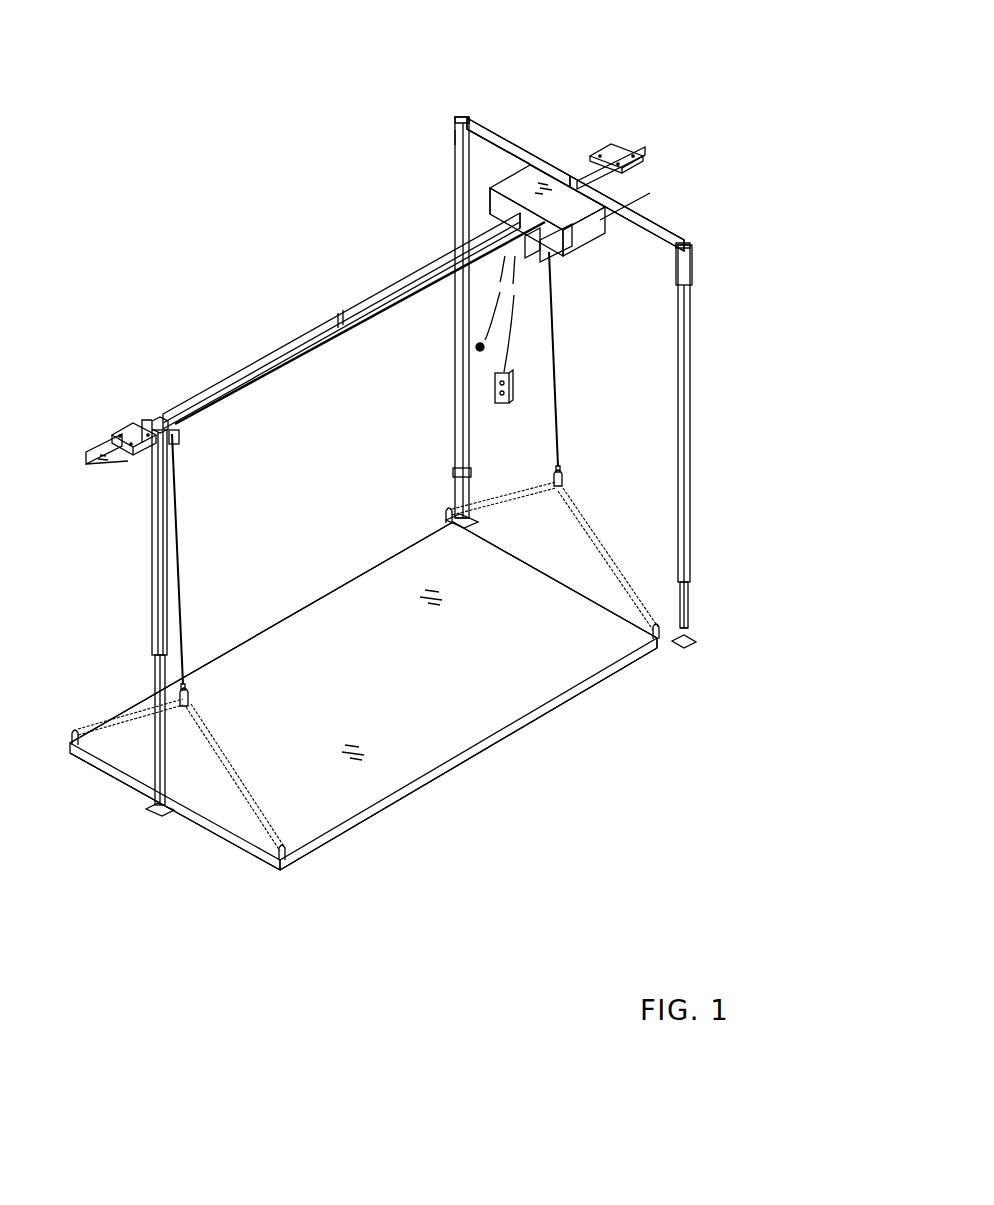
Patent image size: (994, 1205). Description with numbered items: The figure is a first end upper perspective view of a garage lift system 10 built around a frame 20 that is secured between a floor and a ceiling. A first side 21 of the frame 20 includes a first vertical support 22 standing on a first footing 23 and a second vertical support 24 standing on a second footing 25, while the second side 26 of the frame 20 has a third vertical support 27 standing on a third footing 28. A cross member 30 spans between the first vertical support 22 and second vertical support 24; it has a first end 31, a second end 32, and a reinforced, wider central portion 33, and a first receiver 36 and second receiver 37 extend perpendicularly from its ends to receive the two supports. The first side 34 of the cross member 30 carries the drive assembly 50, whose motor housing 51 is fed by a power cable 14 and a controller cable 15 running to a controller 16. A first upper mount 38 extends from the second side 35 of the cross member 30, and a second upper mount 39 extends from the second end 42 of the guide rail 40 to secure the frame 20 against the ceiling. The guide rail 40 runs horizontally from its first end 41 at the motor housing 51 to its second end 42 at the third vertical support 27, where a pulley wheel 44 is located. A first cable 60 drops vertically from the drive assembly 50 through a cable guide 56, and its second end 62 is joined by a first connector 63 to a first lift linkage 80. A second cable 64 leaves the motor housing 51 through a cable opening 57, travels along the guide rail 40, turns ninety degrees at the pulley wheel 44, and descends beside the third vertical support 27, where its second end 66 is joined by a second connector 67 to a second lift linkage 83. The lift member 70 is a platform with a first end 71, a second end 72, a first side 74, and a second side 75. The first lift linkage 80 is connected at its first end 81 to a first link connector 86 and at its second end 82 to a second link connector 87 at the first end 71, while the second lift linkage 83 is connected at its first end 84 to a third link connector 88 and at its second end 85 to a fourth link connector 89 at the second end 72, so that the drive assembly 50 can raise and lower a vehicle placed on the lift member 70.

The garage lift system 10 is at (220, 156).
The power cable 14 is at (478, 327).
The controller cable 15 is at (498, 385).
The controller 16 is at (501, 405).
The frame 20 is at (509, 126).
The first side of the frame 21 is at (521, 162).
The first vertical support 22 is at (690, 400).
The first footing 23 is at (694, 641).
The second vertical support 24 is at (455, 190).
The second footing 25 is at (470, 521).
The second side of the frame 26 is at (152, 568).
The third vertical support 27 is at (152, 628).
The third footing 28 is at (148, 815).
The cross member 30 is at (660, 235).
The first end of the cross member 31 is at (684, 245).
The second end of the cross member 32 is at (466, 114).
The central portion of the cross member 33 is at (611, 224).
The first side of the cross member 34 is at (497, 163).
The second side of the cross member 35 is at (641, 208).
The first receiver 36 is at (691, 275).
The second receiver 37 is at (448, 138).
The first upper mount 38 is at (616, 152).
The second upper mount 39 is at (125, 436).
The guide rail 40 is at (275, 348).
The first end of the guide rail 41 is at (487, 206).
The second end of the guide rail 42 is at (160, 417).
The pulley wheel 44 is at (180, 435).
The drive assembly 50 is at (480, 178).
The motor housing 51 is at (500, 197).
The cable guide 56 is at (554, 262).
The cable opening 57 is at (562, 244).
The first cable 60 is at (556, 412).
The second end of the first cable 62 is at (561, 455).
The first connector 63 is at (566, 477).
The second cable 64 is at (182, 532).
The second end of the second cable 66 is at (185, 672).
The second connector 67 is at (192, 700).
The lift member 70 is at (472, 772).
The first end of the lift member 71 is at (492, 537).
The second end of the lift member 72 is at (222, 848).
The first side of the lift member 74 is at (384, 804).
The second side of the lift member 75 is at (300, 596).
The first lift linkage 80 is at (600, 536).
The first end of the first lift linkage 81 is at (653, 650).
The second end of the first lift linkage 82 is at (466, 508).
The second lift linkage 83 is at (262, 778).
The first end of the second lift linkage 84 is at (270, 872).
The second end of the second lift linkage 85 is at (88, 724).
The first link connector 86 is at (659, 633).
The second link connector 87 is at (444, 517).
The third link connector 88 is at (283, 862).
The fourth link connector 89 is at (74, 746).